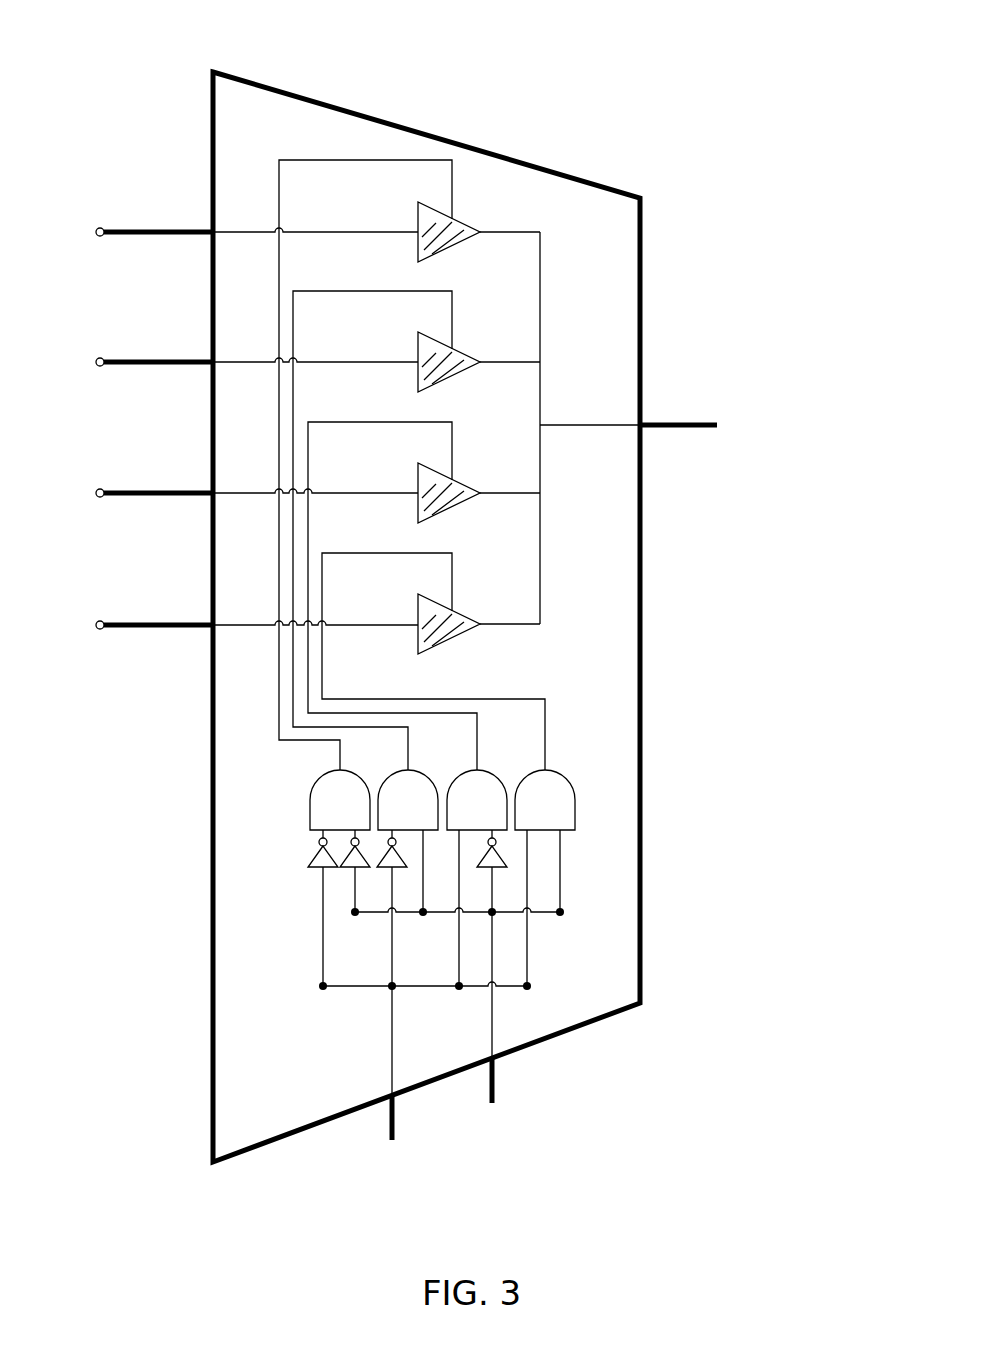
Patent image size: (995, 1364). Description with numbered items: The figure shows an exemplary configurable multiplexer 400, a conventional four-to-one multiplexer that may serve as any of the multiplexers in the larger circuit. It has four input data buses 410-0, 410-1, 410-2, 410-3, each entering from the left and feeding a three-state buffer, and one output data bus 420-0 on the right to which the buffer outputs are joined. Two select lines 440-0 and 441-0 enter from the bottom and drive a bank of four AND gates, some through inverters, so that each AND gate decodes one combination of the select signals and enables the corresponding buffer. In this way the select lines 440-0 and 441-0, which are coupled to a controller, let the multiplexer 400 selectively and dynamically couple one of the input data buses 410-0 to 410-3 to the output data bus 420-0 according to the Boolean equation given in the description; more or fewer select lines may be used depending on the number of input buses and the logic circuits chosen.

The configurable multiplexer 400 is at (335, 583).
The input data bus 410-0 is at (157, 230).
The input data bus 410-1 is at (159, 355).
The input data bus 410-2 is at (149, 488).
The input data bus 410-3 is at (153, 620).
The output data bus 420-0 is at (700, 420).
The select line 440-0 is at (387, 1120).
The select line 441-0 is at (498, 1085).